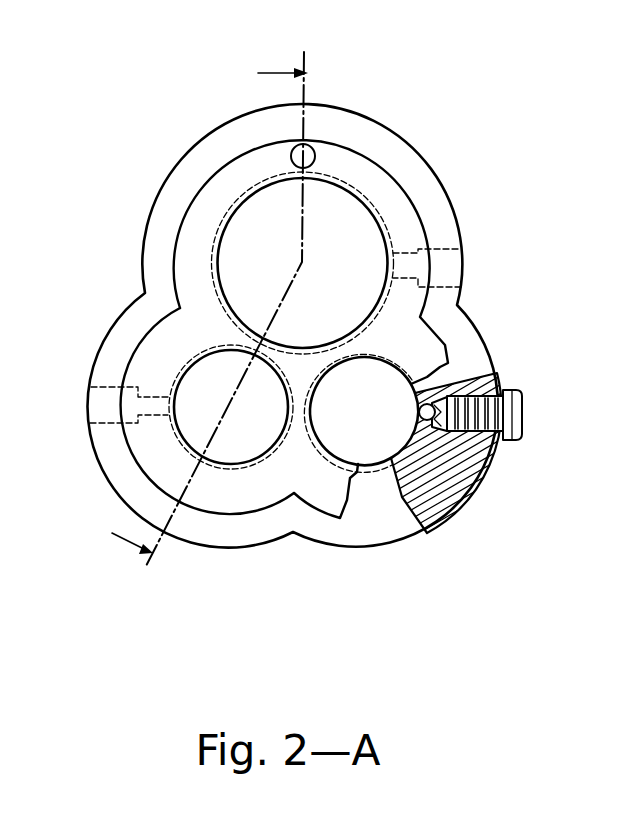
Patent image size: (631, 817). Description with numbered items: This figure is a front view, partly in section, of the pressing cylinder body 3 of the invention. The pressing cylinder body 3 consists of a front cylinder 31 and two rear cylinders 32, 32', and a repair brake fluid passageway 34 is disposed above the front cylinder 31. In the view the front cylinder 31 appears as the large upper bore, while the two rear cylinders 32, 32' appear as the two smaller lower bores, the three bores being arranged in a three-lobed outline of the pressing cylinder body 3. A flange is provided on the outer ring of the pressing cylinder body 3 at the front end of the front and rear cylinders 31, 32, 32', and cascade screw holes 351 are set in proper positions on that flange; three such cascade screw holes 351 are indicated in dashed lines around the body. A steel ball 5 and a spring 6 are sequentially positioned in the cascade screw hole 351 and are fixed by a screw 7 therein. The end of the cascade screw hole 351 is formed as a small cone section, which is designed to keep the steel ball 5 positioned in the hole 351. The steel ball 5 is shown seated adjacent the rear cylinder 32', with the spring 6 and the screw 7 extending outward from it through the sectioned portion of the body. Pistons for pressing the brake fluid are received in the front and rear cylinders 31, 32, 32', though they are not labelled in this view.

The pressing cylinder body 3 is at (340, 102).
The repair brake fluid passageway 34 is at (318, 155).
The front cylinder 31 is at (355, 217).
The rear cylinder 32 is at (231, 477).
The rear cylinder 32' is at (361, 482).
The cascade screw hole 351 is at (460, 247).
The steel ball 5 is at (417, 412).
The spring 6 is at (467, 383).
The clamping bolt 7 is at (513, 392).